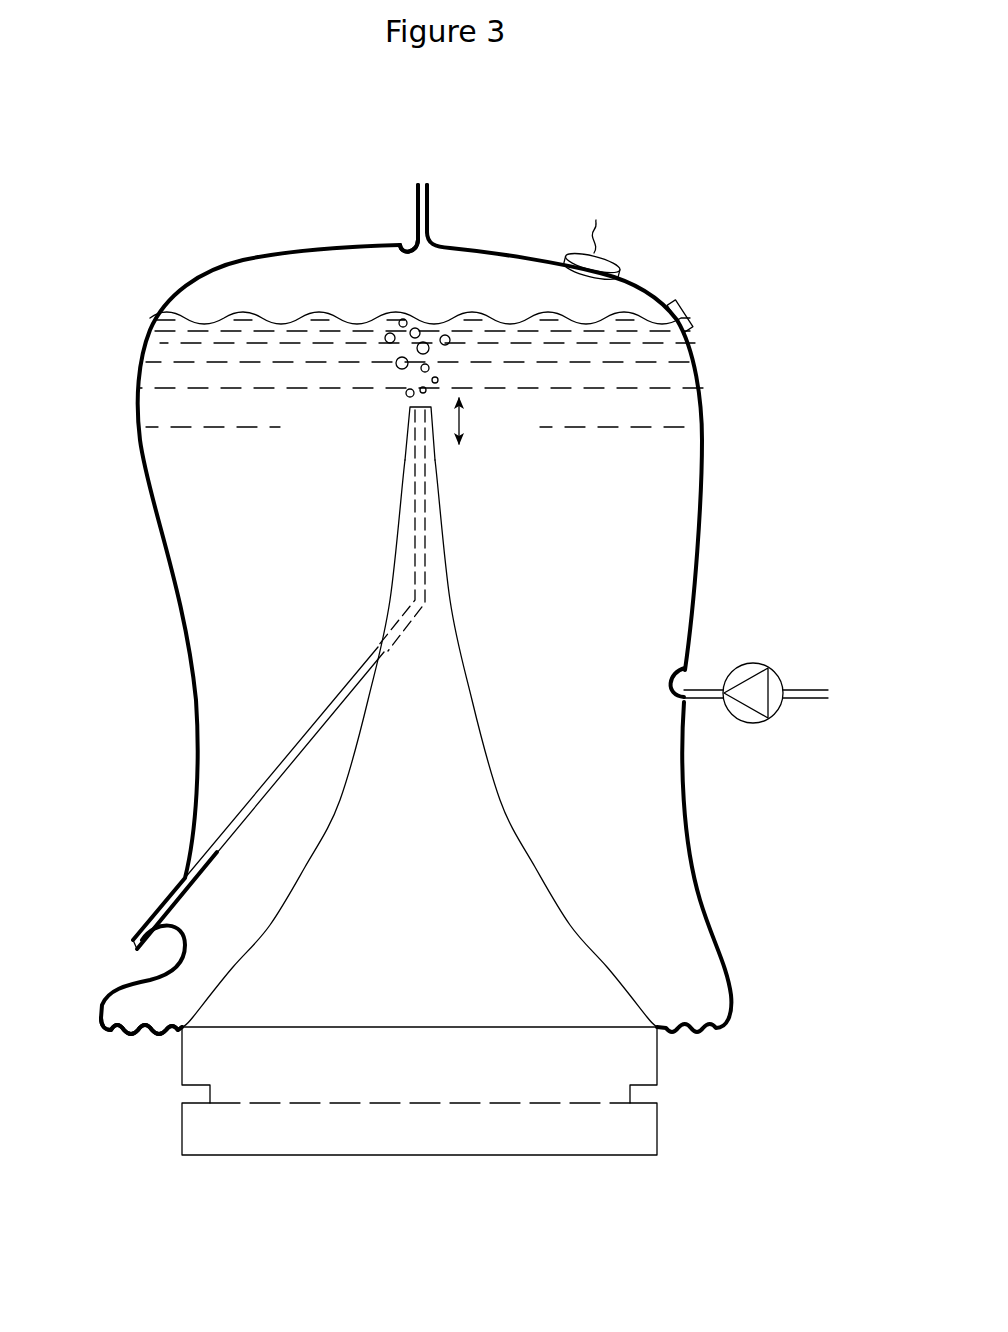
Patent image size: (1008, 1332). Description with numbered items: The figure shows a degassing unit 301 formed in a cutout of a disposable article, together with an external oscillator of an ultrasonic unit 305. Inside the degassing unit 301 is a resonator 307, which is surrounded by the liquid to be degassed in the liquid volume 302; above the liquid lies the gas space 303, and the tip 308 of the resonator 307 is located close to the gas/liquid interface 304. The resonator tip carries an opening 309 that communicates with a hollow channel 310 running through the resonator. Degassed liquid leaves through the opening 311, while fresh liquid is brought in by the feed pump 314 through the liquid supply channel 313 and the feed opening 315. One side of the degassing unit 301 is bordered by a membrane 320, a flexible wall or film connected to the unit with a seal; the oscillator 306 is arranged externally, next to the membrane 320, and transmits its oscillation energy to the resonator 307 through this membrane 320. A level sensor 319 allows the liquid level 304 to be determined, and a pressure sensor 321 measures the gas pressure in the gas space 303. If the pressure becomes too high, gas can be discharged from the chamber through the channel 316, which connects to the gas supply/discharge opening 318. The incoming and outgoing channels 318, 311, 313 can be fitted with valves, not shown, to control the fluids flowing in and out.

The degassing unit 301 is at (735, 247).
The liquid volume 302 is at (650, 388).
The gas space 303 is at (490, 283).
The gas/liquid interface 304 is at (247, 313).
The ultrasonic unit 305 is at (532, 655).
The oscillator 306 is at (533, 1148).
The resonator 307 is at (530, 877).
The resonator tip 308 is at (402, 408).
The opening in the resonator tip 309 is at (423, 403).
The hollow channel 310 is at (420, 547).
The opening for discharge of degassed liquid 311 is at (130, 938).
The liquid supply channel 313 is at (813, 690).
The feed pump 314 is at (760, 720).
The feed opening 315 is at (683, 690).
The inlet/outlet channel for gas/air 316 is at (428, 192).
The gas supply/discharge opening 318 is at (400, 243).
The level sensor 319 is at (683, 320).
The wall membrane 320 is at (140, 1033).
The pressure sensor 321 is at (610, 255).